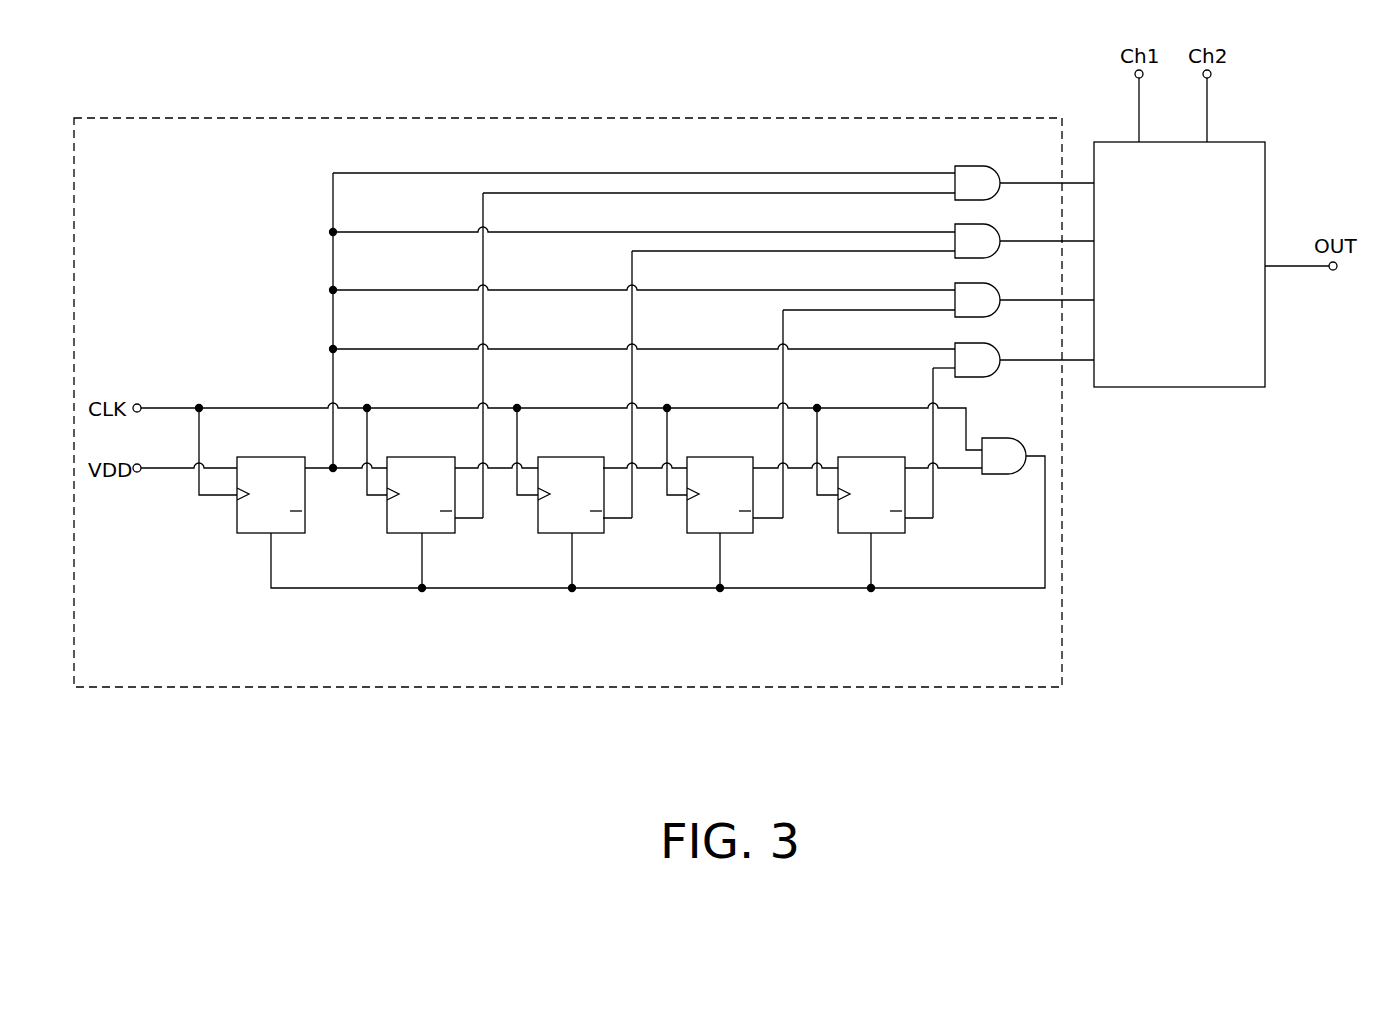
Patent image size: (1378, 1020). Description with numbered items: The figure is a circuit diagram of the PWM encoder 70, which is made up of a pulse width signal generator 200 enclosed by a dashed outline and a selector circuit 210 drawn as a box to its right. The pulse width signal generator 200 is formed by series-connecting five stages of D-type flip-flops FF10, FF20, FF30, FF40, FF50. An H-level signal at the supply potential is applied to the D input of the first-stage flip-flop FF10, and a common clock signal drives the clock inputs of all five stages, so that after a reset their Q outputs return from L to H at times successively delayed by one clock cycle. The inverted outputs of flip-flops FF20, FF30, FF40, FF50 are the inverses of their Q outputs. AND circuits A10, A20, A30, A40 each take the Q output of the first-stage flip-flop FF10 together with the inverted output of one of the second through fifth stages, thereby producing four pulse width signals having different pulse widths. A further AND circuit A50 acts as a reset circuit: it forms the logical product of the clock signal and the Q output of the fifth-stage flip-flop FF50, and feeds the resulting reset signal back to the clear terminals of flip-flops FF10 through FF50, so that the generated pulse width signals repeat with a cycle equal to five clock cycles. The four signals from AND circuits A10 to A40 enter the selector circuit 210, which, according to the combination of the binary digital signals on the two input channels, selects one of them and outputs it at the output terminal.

The PWM encoder 70 is at (760, 742).
The pulse width signal generator 200 is at (1063, 632).
The selector circuit 210 is at (1176, 388).
The AND circuit A10 is at (965, 167).
The AND circuit A20 is at (965, 224).
The AND circuit A30 is at (965, 283).
The AND circuit A40 is at (965, 343).
The AND circuit A50 is at (1000, 475).
The D-type flip-flop FF10 is at (246, 535).
The D-type flip-flop FF20 is at (396, 535).
The D-type flip-flop FF30 is at (547, 535).
The D-type flip-flop FF40 is at (696, 535).
The D-type flip-flop FF50 is at (847, 535).